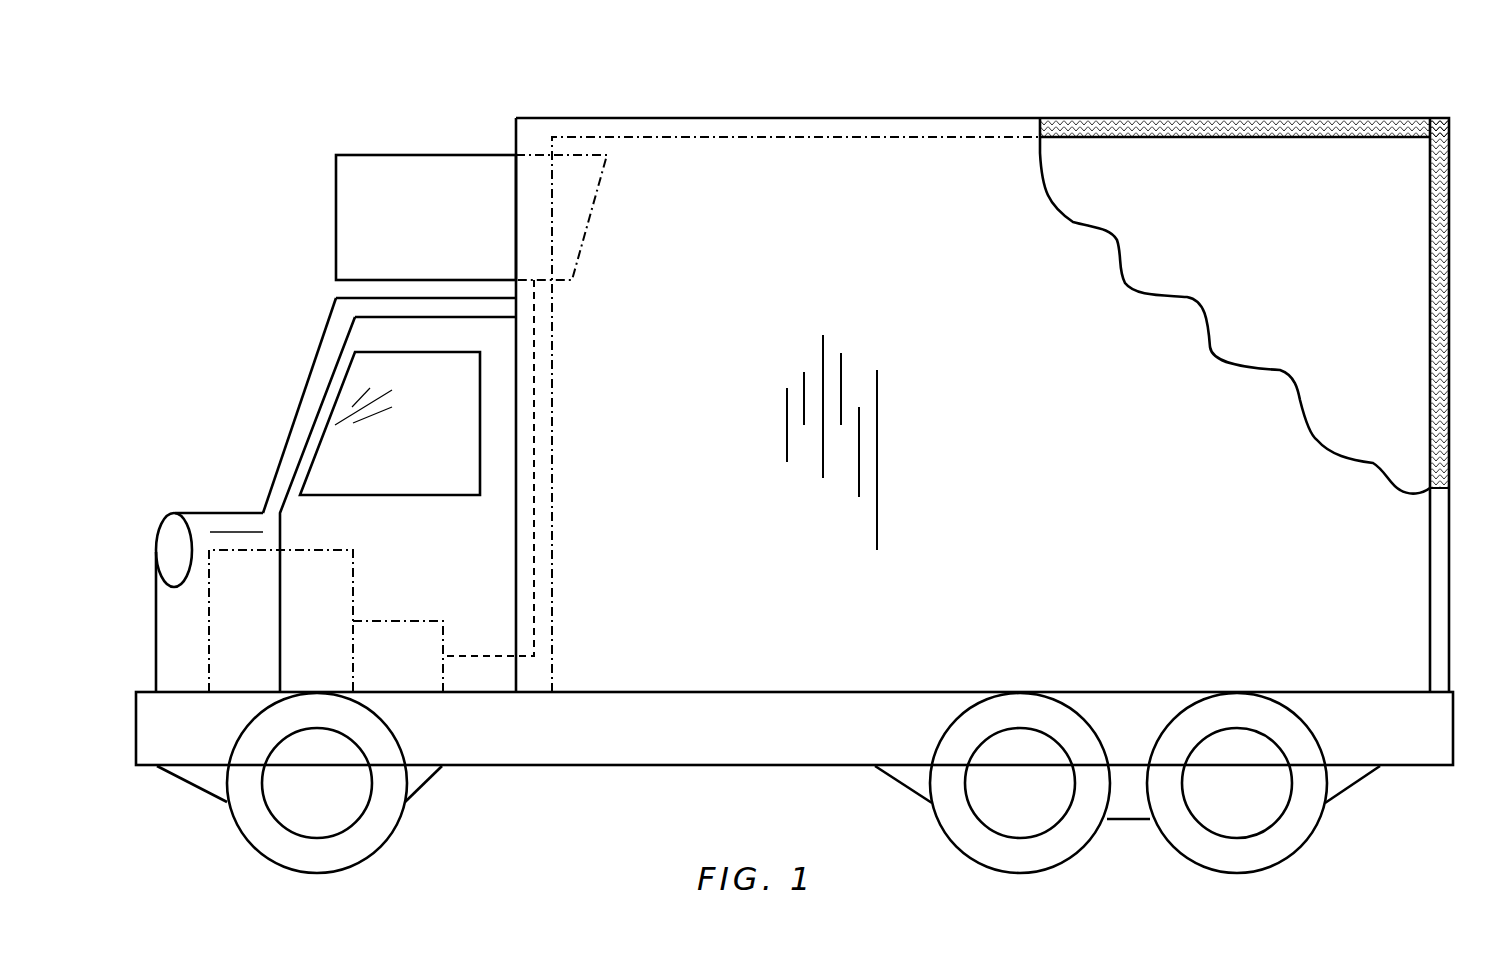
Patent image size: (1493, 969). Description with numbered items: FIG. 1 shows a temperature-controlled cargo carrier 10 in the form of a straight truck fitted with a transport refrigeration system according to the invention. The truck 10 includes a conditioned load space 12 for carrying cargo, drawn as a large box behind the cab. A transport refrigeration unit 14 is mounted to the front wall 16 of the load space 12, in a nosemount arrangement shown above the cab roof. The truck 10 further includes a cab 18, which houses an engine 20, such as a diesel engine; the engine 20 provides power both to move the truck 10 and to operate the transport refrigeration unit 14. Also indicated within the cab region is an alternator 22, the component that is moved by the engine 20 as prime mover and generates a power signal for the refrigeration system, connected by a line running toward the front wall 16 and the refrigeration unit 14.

The temperature-controlled cargo carrier 10 is at (795, 92).
The conditioned load space 12 is at (1010, 120).
The transport refrigeration unit 14 is at (422, 153).
The front wall 16 is at (552, 577).
The cab 18 is at (210, 513).
The engine 20 is at (353, 567).
The alternator 22 is at (407, 617).